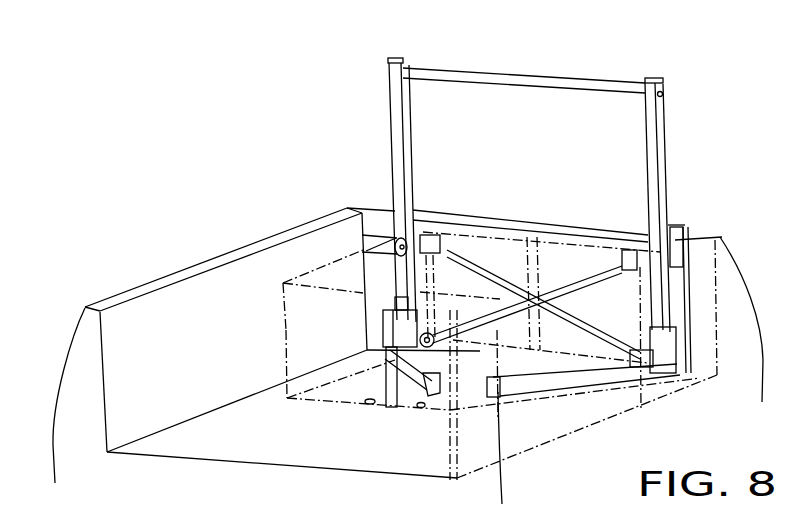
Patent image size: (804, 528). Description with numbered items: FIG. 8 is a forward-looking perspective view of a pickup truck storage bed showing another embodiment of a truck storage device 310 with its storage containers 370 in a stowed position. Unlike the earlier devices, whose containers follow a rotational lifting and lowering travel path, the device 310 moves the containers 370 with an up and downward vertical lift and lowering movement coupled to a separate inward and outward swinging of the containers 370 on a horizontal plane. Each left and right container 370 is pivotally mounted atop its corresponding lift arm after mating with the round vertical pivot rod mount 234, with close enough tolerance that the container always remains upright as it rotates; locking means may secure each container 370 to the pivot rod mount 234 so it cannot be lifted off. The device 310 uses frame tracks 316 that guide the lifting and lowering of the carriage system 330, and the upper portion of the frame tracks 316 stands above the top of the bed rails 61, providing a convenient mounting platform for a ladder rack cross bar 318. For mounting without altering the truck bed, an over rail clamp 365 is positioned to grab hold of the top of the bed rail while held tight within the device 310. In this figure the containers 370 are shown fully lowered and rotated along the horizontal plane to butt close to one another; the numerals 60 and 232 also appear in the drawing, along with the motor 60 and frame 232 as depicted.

The device 310 is at (157, 78).
The frame tracks 316 is at (388, 115).
The ladder rack cross bar 318 is at (527, 80).
The carriage system 330 is at (455, 200).
The over rail clamp 365 is at (682, 225).
The container 370 is at (313, 272).
The motor 60 is at (380, 233).
The bed rails 61 is at (147, 287).
The frame 232 is at (633, 383).
The round vertical pivot rod mount 234 is at (417, 400).